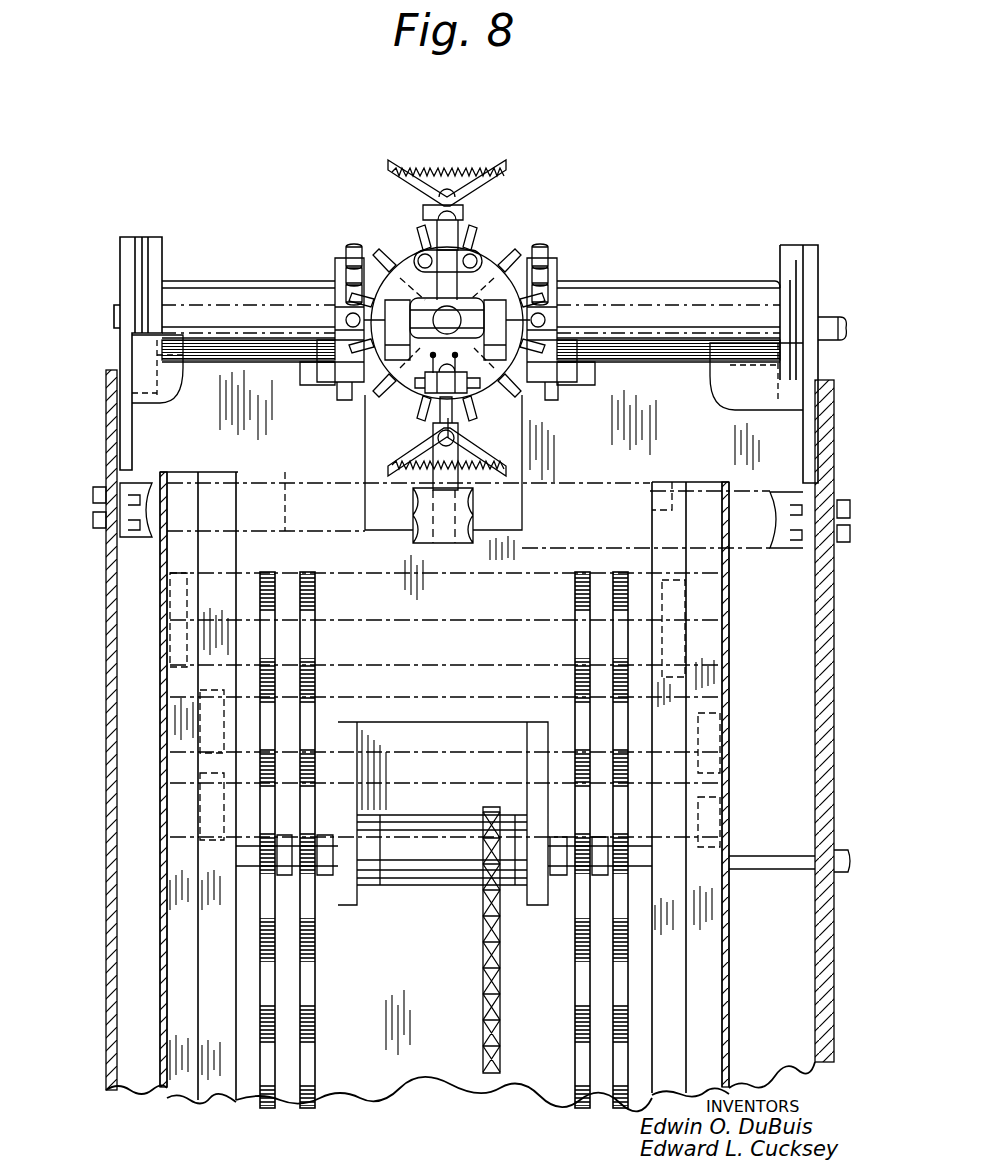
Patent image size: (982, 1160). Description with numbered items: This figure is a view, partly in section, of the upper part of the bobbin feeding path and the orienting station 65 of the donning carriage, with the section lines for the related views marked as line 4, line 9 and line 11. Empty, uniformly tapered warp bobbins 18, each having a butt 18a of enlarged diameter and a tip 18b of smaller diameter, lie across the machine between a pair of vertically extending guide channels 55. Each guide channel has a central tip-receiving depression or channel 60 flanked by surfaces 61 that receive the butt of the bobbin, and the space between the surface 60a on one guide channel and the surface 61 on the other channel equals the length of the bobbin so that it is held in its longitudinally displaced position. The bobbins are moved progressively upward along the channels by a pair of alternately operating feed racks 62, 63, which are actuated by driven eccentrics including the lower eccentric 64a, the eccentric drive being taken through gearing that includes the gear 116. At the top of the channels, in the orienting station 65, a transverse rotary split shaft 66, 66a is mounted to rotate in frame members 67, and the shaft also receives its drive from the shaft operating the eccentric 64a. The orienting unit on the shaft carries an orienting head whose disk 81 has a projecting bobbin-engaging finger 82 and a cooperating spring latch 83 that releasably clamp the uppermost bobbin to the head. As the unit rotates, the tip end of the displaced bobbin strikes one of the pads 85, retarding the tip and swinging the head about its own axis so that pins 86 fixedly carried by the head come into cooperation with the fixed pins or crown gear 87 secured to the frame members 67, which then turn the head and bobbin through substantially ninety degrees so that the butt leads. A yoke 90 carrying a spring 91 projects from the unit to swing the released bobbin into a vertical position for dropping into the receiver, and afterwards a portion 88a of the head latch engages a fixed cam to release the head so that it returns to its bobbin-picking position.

The section line 4— 4 is at (642, 205).
The section line 9— 9 is at (365, 247).
The section line 11— 11 is at (450, 150).
The bobbins 18 is at (478, 605).
The butt 18a is at (200, 770).
The tip 18b is at (170, 600).
The vertically extending guide channels 55 is at (150, 946).
The central tip-receiving depression or channel 60 is at (175, 1096).
The surface 60a is at (160, 990).
The surfaces 61 is at (212, 1098).
The feed rack 62 is at (268, 578).
The feed rack 63 is at (312, 580).
The lower eccentric 64a is at (560, 888).
The orienting station 65 is at (358, 156).
The rotary split shaft 66 is at (834, 316).
The rotary split shaft 66a is at (270, 300).
The frame members 67 is at (235, 283).
The disk 81 is at (500, 265).
The bobbin-engaging finger 82 is at (402, 392).
The spring latch 83 is at (440, 300).
The pads 85 is at (172, 405).
The pins 86 is at (410, 247).
The fixed pins or crown gear 87 is at (352, 252).
The portion of latch 88a is at (438, 422).
The yoke 90 is at (510, 183).
The spring 91 is at (418, 165).
The gear 116 is at (500, 1015).